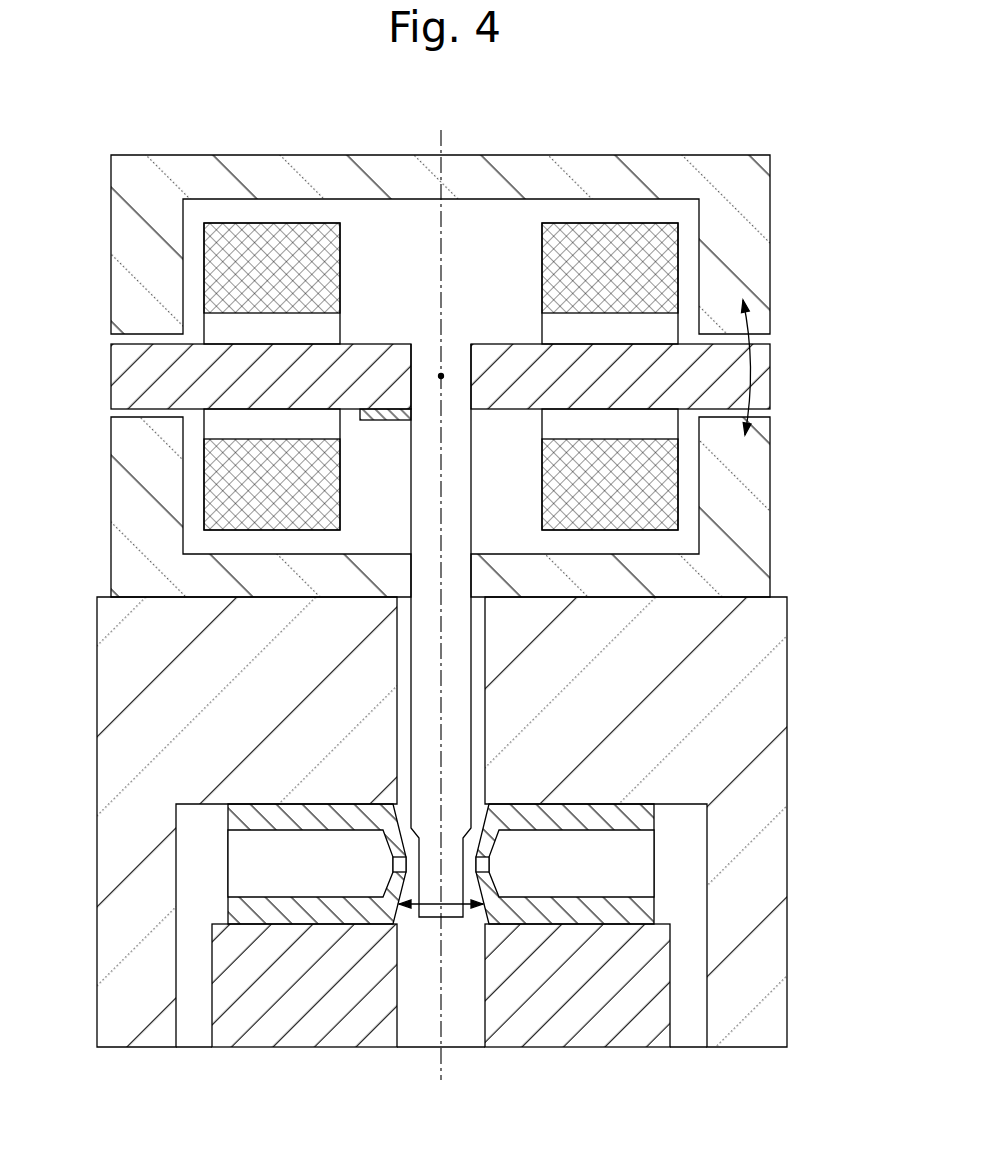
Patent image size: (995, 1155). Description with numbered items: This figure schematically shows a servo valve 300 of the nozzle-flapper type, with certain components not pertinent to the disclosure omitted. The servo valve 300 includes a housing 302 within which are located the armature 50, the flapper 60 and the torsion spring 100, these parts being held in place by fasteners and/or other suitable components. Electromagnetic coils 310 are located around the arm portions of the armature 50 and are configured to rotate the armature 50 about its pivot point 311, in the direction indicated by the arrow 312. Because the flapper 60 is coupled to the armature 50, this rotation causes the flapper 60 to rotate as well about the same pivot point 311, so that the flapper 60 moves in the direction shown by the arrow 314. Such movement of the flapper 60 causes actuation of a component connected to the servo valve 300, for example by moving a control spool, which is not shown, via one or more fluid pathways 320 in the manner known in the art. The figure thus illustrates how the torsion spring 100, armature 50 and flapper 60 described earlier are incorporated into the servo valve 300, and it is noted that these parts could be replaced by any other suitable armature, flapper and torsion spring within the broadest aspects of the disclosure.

The servo valve 300 is at (748, 113).
The housing 302 is at (745, 192).
The electromagnetic coils 310 is at (273, 240).
The pivot point 311 is at (443, 373).
The arrow 312 is at (750, 365).
The armature 50 is at (445, 608).
The torsion spring 100 is at (376, 416).
The flapper 60 is at (460, 652).
The arrow 314 is at (430, 907).
The fluid pathways 320 is at (193, 1027).